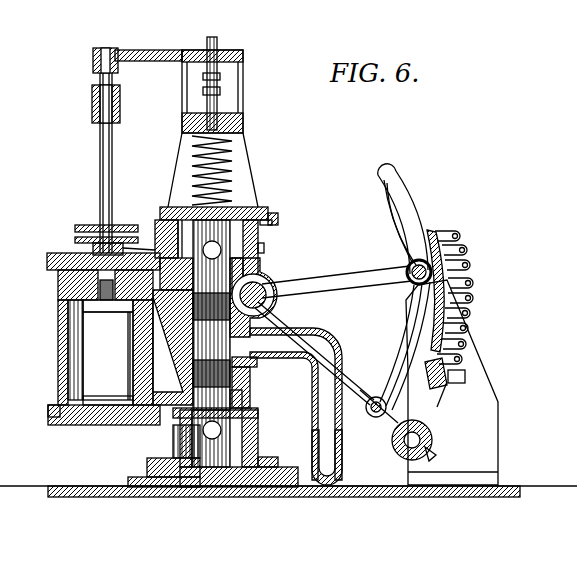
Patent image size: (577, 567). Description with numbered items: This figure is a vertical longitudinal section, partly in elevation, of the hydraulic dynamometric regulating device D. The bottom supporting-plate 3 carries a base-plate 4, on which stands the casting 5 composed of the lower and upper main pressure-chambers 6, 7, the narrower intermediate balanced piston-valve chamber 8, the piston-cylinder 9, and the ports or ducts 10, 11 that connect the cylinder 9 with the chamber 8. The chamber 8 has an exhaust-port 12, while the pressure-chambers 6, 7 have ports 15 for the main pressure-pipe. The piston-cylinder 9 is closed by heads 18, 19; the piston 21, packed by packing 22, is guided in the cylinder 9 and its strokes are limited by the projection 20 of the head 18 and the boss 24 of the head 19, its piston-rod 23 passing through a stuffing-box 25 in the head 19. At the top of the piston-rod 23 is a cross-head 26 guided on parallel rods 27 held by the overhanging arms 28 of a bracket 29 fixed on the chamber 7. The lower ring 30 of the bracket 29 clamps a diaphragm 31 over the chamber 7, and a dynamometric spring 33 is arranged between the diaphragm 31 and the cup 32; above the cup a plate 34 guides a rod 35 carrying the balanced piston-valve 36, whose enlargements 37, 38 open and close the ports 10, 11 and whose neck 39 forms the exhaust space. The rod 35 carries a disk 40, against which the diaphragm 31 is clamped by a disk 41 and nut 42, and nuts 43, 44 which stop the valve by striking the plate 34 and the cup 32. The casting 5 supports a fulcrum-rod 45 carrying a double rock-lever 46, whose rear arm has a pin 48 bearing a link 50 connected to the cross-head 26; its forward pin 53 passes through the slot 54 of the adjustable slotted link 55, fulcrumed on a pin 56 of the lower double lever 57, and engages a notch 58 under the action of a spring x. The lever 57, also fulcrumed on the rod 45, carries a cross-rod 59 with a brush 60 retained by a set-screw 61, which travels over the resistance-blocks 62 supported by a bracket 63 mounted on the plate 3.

The bottom supporting-plate 3 is at (305, 497).
The base-plate 4 is at (134, 481).
The casting 5 is at (93, 352).
The main pressure-chamber 6 is at (239, 438).
The main pressure-chamber 7 is at (214, 257).
The balanced piston-valve chamber 8 is at (200, 340).
The piston-cylinder 9 is at (108, 356).
The port 10 is at (173, 347).
The port 11 is at (194, 368).
The exhaust-port 12 is at (237, 376).
The port 15 is at (263, 250).
The head 18 is at (101, 426).
The head 19 is at (62, 256).
The projection 20 is at (108, 404).
The piston 21 is at (113, 302).
The packing 22 is at (78, 295).
The piston-rod 23 is at (103, 209).
The projection or boss 24 is at (70, 310).
The stuffing-box 25 is at (100, 224).
The cross-head 26 is at (100, 102).
The parallel rods 27 is at (106, 49).
The overhanging arms 28 is at (148, 44).
The bracket 29 is at (247, 142).
The lower ring 30 is at (271, 212).
The diaphragm 31 is at (258, 205).
The cup 32 is at (243, 118).
The dynamometric spring 33 is at (192, 152).
The plate 34 is at (222, 82).
The rod 35 is at (215, 72).
The balanced piston-valve 36 is at (258, 272).
The enlargement 37 is at (236, 388).
The enlargement 38 is at (266, 288).
The neck 39 is at (292, 324).
The disk 40 is at (272, 222).
The disk 41 is at (190, 205).
The nut 42 is at (242, 205).
The nut 43 is at (203, 77).
The nut 44 is at (203, 91).
The fulcrum-rod 45 is at (293, 283).
The double rock-lever 46 is at (283, 303).
The pin 48 is at (170, 250).
The link 50 is at (156, 222).
The pin 53 is at (431, 272).
The slot 54 is at (413, 203).
The adjustable slotted link 55 is at (403, 208).
The pin 56 is at (380, 418).
The double lever 57 is at (388, 343).
The notch 58 is at (366, 320).
The cross-rod 59 is at (433, 440).
The brush 60 is at (441, 384).
The set-screw 61 is at (435, 456).
The resistance-blocks 62 is at (443, 235).
The bracket 63 is at (493, 404).
The pump assembly D is at (307, 157).
The spring x is at (402, 345).